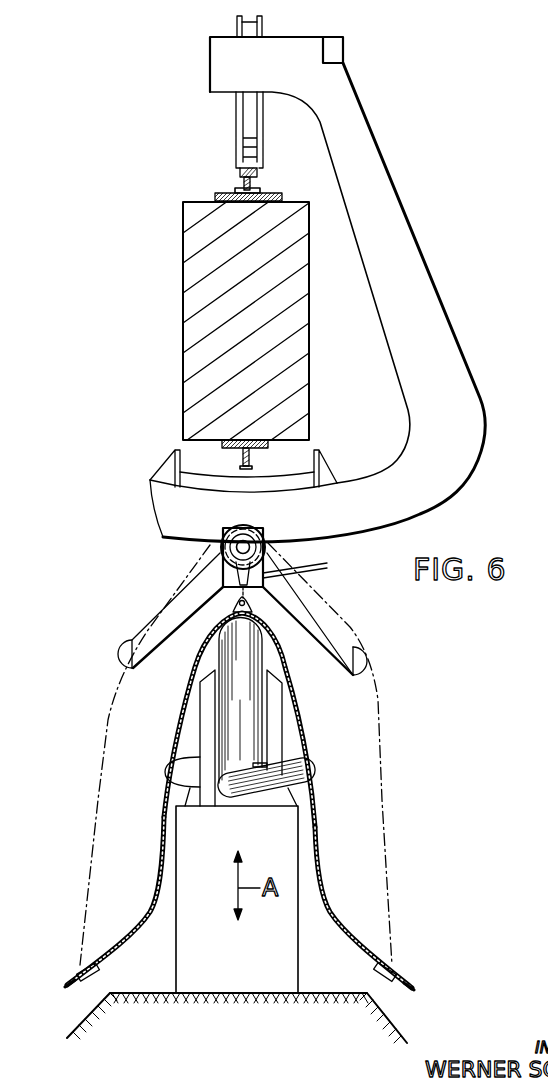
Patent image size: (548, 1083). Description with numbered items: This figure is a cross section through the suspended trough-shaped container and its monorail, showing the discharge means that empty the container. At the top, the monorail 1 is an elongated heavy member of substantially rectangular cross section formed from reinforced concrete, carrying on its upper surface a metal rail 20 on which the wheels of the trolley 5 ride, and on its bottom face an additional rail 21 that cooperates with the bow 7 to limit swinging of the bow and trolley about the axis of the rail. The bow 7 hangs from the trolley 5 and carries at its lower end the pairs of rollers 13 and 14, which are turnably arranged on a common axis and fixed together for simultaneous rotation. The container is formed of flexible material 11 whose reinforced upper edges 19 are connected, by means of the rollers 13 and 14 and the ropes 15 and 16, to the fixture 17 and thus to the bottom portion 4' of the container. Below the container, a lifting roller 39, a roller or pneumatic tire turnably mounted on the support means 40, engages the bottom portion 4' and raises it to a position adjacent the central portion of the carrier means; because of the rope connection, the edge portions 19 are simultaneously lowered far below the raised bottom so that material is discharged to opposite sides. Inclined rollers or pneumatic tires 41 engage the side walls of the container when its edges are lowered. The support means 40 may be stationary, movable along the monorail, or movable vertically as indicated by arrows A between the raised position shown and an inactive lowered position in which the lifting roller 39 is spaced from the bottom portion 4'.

The monorail 1 is at (196, 318).
The bottom portion 4' is at (274, 713).
The trolley 5 is at (248, 113).
The bow 7 is at (398, 215).
The flexible material 11 is at (163, 823).
The rollers 13 is at (228, 537).
The rollers 14 is at (265, 537).
The rope 15 is at (311, 567).
The rope 16 is at (104, 752).
The fixture 17 is at (250, 601).
The upper edges 19 is at (73, 987).
The metal rail 20 is at (250, 181).
The additional rail 21 is at (250, 461).
The lifting roller 39 is at (256, 722).
The support means 40 is at (193, 958).
The inclined rollers 41 is at (180, 767).